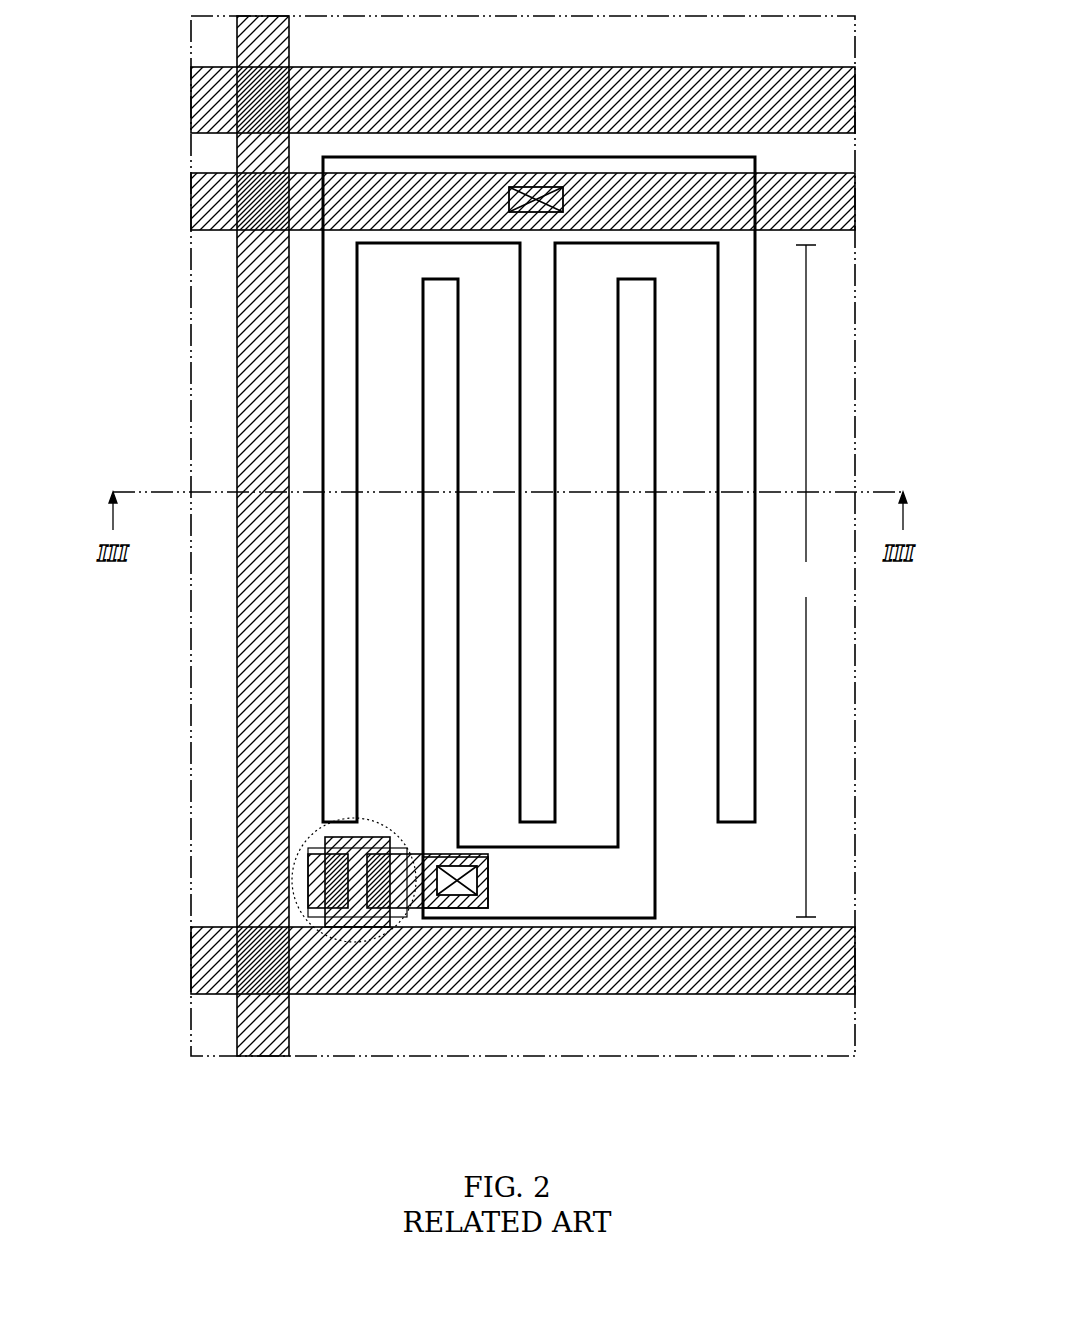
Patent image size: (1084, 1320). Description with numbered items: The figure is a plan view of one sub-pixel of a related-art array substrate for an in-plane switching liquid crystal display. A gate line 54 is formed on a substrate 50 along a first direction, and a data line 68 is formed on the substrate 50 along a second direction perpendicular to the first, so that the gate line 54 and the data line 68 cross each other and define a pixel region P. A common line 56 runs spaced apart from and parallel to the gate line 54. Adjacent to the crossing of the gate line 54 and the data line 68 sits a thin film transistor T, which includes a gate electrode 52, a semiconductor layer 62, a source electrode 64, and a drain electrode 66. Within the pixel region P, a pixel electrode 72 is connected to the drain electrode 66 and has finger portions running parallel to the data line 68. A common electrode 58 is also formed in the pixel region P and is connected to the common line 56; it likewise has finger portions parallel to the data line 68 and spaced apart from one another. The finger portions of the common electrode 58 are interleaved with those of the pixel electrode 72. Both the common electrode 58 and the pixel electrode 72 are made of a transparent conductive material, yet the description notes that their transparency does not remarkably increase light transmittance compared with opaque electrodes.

The substrate 50 is at (738, 1057).
The gate electrode 52 is at (387, 838).
The gate line 54 is at (872, 67).
The common line 56 is at (872, 173).
The common electrode 58 is at (755, 697).
The semiconductor layer 62 is at (360, 930).
The source electrode 64 is at (330, 908).
The drain electrode 66 is at (470, 905).
The data line 68 is at (237, 730).
The pixel electrode 72 is at (656, 767).
The thin film transistor T is at (300, 875).
The pixel region P is at (806, 581).